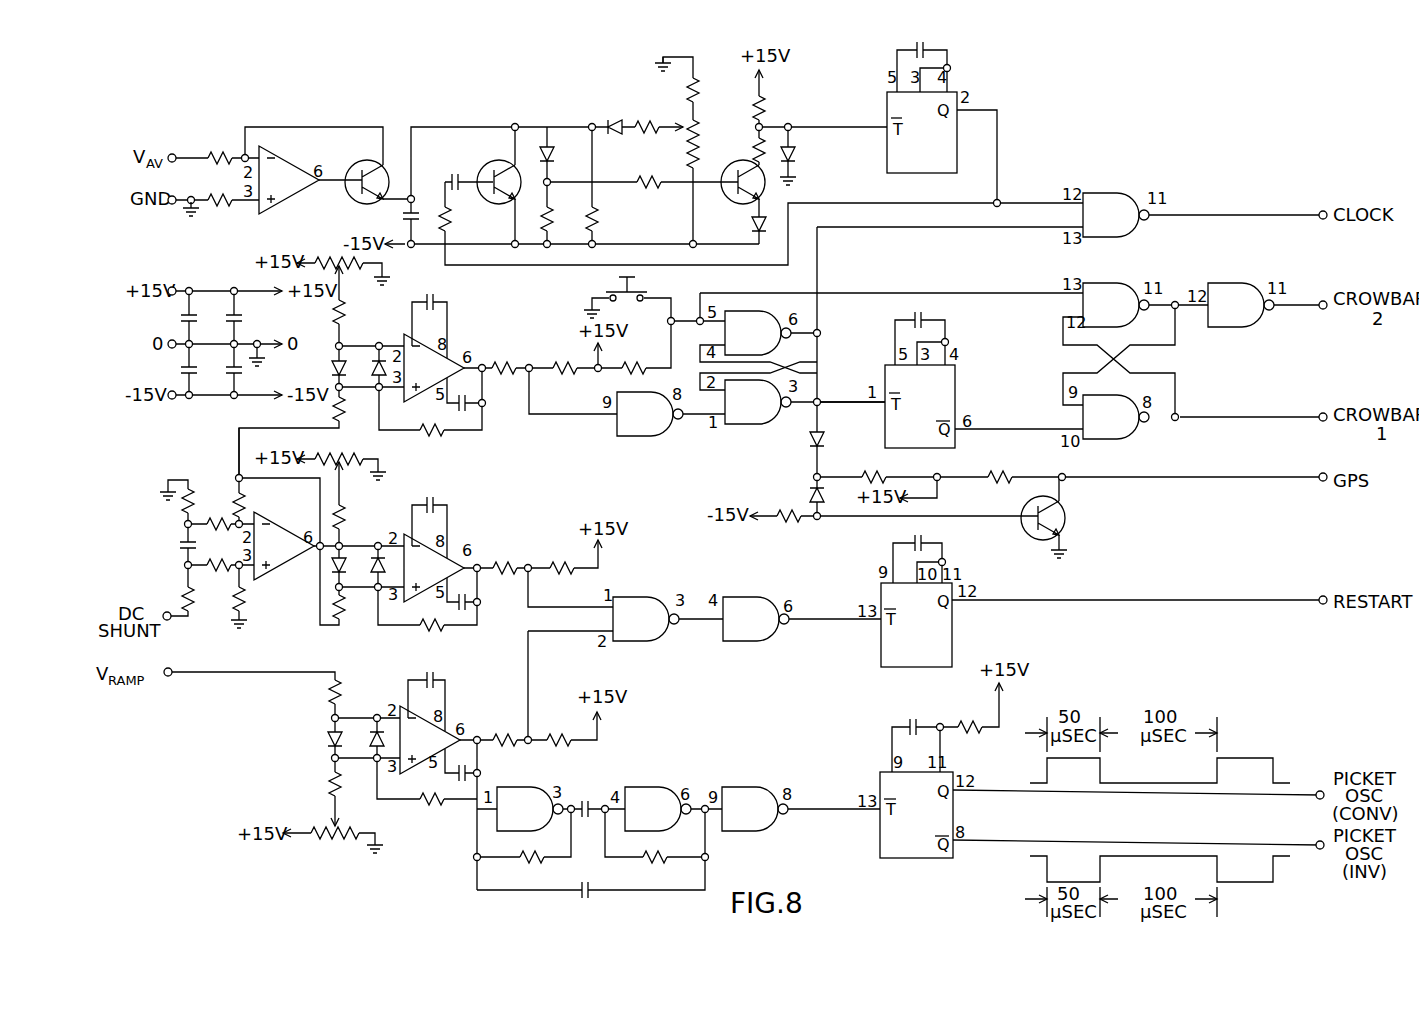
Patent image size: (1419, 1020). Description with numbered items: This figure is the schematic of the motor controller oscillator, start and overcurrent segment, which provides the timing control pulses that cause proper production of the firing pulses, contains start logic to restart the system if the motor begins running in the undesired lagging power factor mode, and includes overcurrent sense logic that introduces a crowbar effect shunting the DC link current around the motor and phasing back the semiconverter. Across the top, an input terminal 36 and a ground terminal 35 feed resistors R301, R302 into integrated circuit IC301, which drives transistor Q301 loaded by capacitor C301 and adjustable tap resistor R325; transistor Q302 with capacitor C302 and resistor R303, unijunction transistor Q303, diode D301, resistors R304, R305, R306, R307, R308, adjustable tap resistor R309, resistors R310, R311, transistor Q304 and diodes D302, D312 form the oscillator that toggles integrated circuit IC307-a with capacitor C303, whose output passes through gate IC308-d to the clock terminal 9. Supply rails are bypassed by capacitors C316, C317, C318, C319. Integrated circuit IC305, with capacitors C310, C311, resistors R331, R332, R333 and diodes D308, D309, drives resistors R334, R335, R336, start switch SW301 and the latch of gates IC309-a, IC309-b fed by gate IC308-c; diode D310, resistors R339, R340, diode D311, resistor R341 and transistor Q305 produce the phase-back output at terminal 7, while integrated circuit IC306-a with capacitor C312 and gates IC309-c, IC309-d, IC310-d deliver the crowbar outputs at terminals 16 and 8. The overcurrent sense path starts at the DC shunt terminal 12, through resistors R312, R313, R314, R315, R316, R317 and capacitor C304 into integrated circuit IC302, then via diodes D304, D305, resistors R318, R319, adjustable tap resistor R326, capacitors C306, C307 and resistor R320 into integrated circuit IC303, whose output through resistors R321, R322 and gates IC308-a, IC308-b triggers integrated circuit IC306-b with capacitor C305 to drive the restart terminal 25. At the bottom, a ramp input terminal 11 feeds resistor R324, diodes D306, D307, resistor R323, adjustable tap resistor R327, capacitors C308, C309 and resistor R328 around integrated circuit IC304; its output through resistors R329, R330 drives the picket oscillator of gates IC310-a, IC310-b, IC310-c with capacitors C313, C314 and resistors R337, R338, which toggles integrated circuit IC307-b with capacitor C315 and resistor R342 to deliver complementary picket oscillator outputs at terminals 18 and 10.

The V_AV input terminal 36 is at (177, 149).
The ground terminal 35 is at (168, 211).
The DC shunt terminal 12 is at (174, 626).
The V_RAMP input terminal 11 is at (174, 664).
The CLOCK output terminal 9 is at (1323, 208).
The CROWBAR 2 output terminal 16 is at (1323, 295).
The CROWBAR 1 output terminal 8 is at (1323, 408).
The GPS output terminal 7 is at (1324, 467).
The firing pulse circuit 25 is at (1318, 590).
The picket oscillator (conv) output terminal 18 is at (1318, 785).
The picket oscillator (inv) output terminal 10 is at (1318, 837).
The resistor R301 is at (216, 145).
The resistor R302 is at (207, 185).
The resistor R303 is at (449, 224).
The resistor R304 is at (555, 212).
The resistor R305 is at (598, 220).
The resistor R306 is at (629, 173).
The resistor R307 is at (631, 141).
The resistor R308 is at (688, 90).
The adjustable tap resistor R309 is at (690, 118).
The resistor R310 is at (762, 108).
The resistor R311 is at (756, 140).
The resistor R312 is at (262, 498).
The resistor R313 is at (200, 484).
The resistor R314 is at (220, 510).
The resistor R315 is at (184, 571).
The resistor R316 is at (213, 591).
The resistor R317 is at (243, 598).
The resistor R318 is at (345, 620).
The resistor R319 is at (341, 508).
The resistor R320 is at (428, 630).
The resistor R321 is at (500, 554).
The resistor R322 is at (549, 554).
The resistor R323 is at (328, 790).
The resistor R324 is at (338, 688).
The adjustable tap resistor R325 is at (367, 255).
The adjustable tap resistor R326 is at (348, 458).
The adjustable tap resistor R327 is at (325, 828).
The resistor R328 is at (418, 803).
The resistor R329 is at (493, 726).
The resistor R330 is at (550, 726).
The resistor R331 is at (342, 314).
The resistor R332 is at (333, 422).
The resistor R333 is at (440, 433).
The resistor R334 is at (503, 357).
The resistor R335 is at (558, 357).
The resistor R336 is at (638, 357).
The resistor R337 is at (518, 869).
The resistor R338 is at (653, 869).
The resistor R339 is at (866, 476).
The resistor R340 is at (1005, 465).
The resistor R341 is at (785, 524).
The resistor R342 is at (968, 722).
The capacitor C301 is at (403, 216).
The capacitor C302 is at (452, 173).
The capacitor C303 is at (925, 50).
The capacitor C304 is at (186, 545).
The capacitor C305 is at (924, 538).
The capacitor C306 is at (431, 498).
The capacitor C307 is at (455, 606).
The capacitor C308 is at (453, 670).
The capacitor C309 is at (455, 777).
The capacitor C310 is at (440, 289).
The capacitor C311 is at (436, 409).
The capacitor C312 is at (912, 312).
The capacitor C313 is at (584, 884).
The capacitor C314 is at (585, 800).
The capacitor C315 is at (910, 720).
The capacitor C316 is at (210, 308).
The capacitor C317 is at (255, 308).
The capacitor C318 is at (210, 379).
The capacitor C319 is at (255, 379).
The diode D301 is at (610, 120).
The diode D302 is at (752, 228).
The diode D304 is at (333, 568).
The diode D305 is at (376, 558).
The diode D306 is at (328, 740).
The diode D307 is at (376, 730).
The diode D308 is at (333, 360).
The diode D309 is at (376, 360).
The diode D310 is at (835, 440).
The diode D311 is at (808, 490).
The diode D312 is at (795, 156).
The transistor Q301 is at (356, 163).
The transistor Q302 is at (490, 163).
The unijunction transistor Q303 is at (546, 140).
The transistor Q304 is at (728, 165).
The transistor Q305 is at (1021, 515).
The integrated circuit IC301 is at (274, 191).
The integrated circuit IC302 is at (284, 540).
The integrated circuit IC303 is at (454, 559).
The integrated circuit IC304 is at (452, 730).
The integrated circuit IC305 is at (458, 352).
The integrated circuit section IC306-a is at (883, 368).
The integrated circuit section IC306-b is at (878, 596).
The integrated circuit section IC307-a is at (918, 176).
The integrated circuit section IC307-b is at (878, 772).
The integrated circuit gate section IC308-a is at (645, 597).
The integrated circuit gate section IC308-b is at (730, 597).
The integrated circuit gate section IC308-c is at (660, 438).
The integrated circuit gate section IC308-d is at (1120, 193).
The integrated circuit gate section IC309-a is at (765, 426).
The integrated circuit gate section IC309-b is at (779, 311).
The integrated circuit gate section IC309-c is at (1138, 441).
The integrated circuit gate section IC309-d is at (1120, 283).
The integrated circuit gate section IC310-a is at (518, 785).
The integrated circuit gate section IC310-b is at (655, 787).
The integrated circuit gate section IC310-c is at (760, 787).
The integrated circuit gate section IC310-d is at (1245, 283).
The pushbutton switch SW301 is at (610, 295).